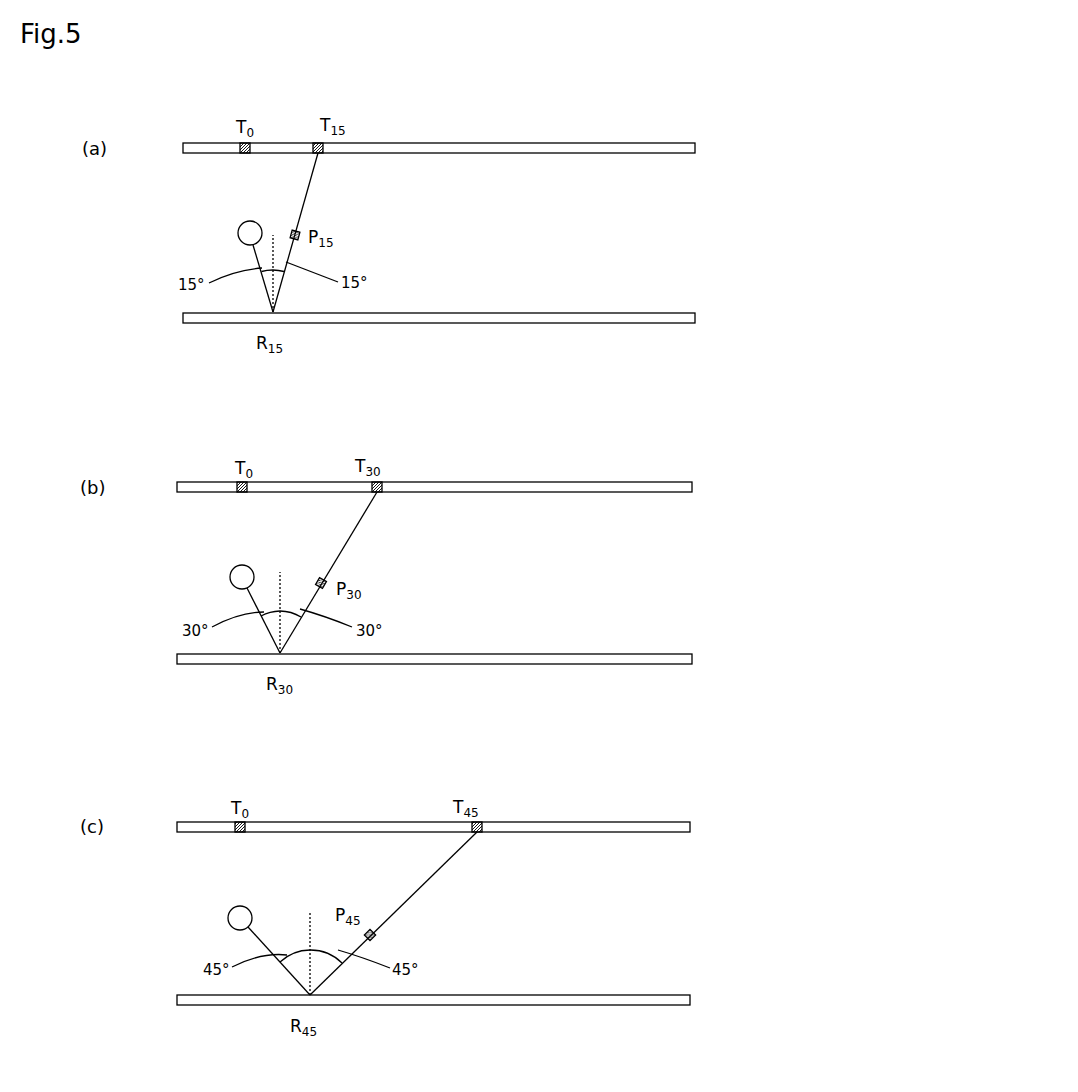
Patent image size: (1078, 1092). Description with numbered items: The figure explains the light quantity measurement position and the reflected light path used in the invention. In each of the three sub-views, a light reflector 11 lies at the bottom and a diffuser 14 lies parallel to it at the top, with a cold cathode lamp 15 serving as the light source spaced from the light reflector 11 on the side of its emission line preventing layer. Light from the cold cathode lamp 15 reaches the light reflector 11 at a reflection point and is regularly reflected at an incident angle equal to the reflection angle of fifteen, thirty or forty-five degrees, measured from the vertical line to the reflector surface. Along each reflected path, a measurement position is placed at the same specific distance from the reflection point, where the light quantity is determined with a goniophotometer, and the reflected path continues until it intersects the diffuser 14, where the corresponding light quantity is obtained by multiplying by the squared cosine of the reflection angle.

The diffuser 14 is at (695, 148).
The light reflector 11 is at (695, 318).
The cold cathode lamp 15 is at (238, 234).